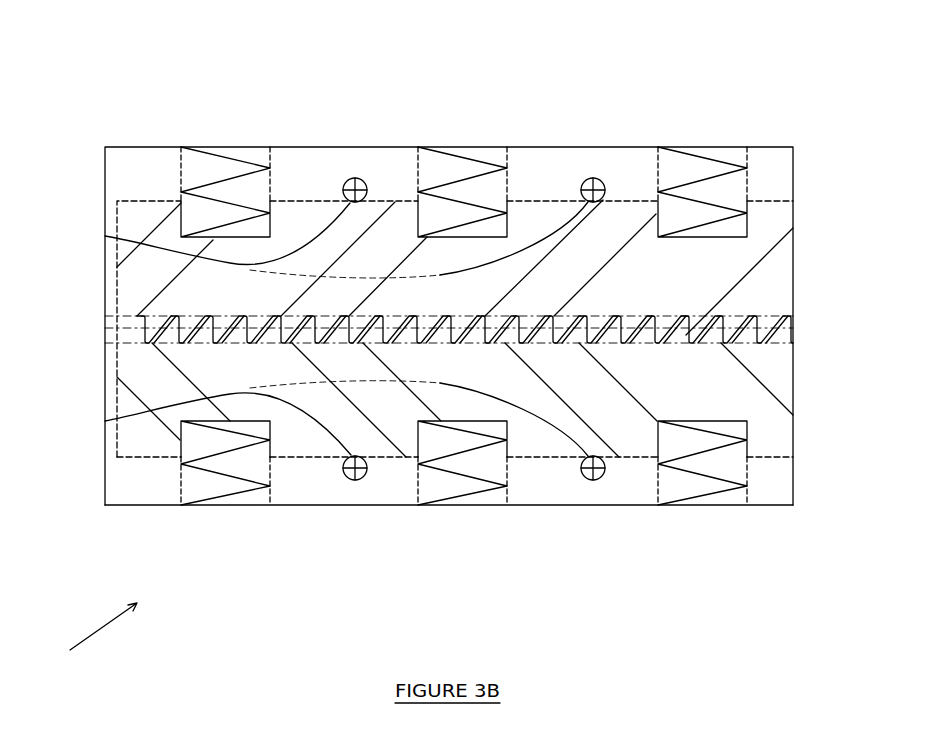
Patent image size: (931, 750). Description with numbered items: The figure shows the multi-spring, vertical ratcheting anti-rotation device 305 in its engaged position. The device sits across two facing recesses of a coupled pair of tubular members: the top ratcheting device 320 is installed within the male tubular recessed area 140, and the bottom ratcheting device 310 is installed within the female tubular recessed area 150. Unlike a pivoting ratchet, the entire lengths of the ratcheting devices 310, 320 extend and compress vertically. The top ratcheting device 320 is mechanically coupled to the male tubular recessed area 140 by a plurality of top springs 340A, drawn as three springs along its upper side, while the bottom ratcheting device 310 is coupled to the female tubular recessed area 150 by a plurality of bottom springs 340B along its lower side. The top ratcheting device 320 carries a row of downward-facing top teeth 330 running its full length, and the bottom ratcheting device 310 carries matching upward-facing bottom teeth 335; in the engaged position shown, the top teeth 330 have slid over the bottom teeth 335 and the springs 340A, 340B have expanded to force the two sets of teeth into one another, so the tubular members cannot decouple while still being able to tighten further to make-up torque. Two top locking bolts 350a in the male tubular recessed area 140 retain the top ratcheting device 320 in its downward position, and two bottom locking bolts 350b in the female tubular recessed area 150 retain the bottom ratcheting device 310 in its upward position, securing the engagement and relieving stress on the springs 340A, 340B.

The male tubular recessed area 140 is at (773, 157).
The female tubular recessed area 150 is at (140, 499).
The multi-spring, vertical ratcheting anti-rotation device 305 is at (70, 650).
The bottom ratcheting device 310 is at (150, 447).
The top ratcheting device 320 is at (773, 246).
The top teeth 330 is at (153, 343).
The bottom teeth 335 is at (775, 327).
The top springs 340A is at (700, 147).
The bottom springs 340B is at (225, 505).
The top locking bolts 350a is at (105, 236).
The bottom locking bolts 350b is at (105, 421).